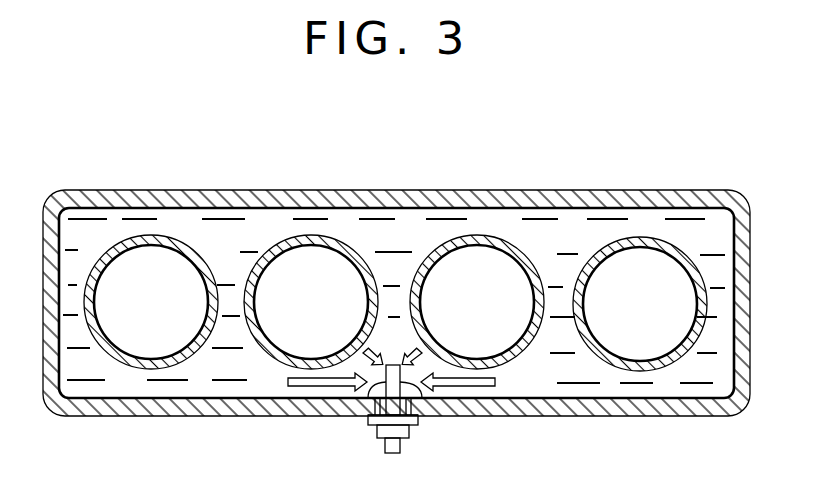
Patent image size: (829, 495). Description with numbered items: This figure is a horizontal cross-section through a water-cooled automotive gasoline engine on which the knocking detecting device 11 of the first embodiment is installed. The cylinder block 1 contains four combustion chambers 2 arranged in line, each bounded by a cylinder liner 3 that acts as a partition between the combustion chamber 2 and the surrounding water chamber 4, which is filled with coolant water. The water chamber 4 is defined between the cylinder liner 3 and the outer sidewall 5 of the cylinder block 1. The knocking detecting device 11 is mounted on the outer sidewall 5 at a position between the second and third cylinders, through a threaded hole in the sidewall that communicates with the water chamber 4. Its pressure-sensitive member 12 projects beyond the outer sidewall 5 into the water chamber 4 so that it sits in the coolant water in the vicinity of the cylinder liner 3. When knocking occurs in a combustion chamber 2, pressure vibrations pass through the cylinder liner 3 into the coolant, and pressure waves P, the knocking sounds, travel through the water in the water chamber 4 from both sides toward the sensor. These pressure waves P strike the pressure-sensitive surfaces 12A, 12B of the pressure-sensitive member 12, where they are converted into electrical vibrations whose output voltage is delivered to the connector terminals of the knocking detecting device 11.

The cylinder block 1 is at (237, 417).
The combustion chamber 2 is at (165, 263).
The cylinder liner 3 is at (283, 247).
The water chamber 4 is at (97, 229).
The outer sidewall 5 is at (470, 405).
The knocking detecting device 11 is at (378, 439).
The pressure-sensitive member 12 is at (393, 365).
The pressure-sensitive surface 12A is at (370, 416).
The pressure-sensitive surface 12B is at (421, 400).
The pressure waves P is at (288, 382).